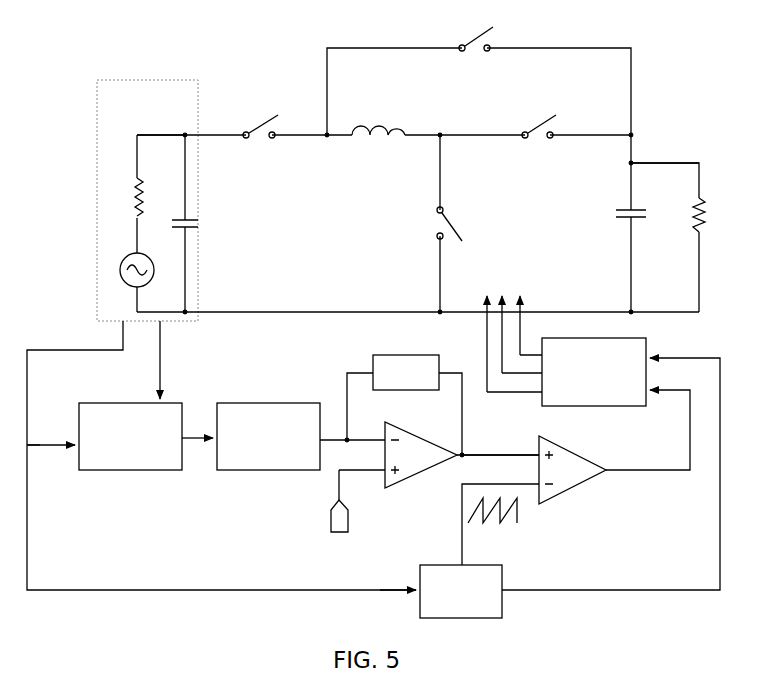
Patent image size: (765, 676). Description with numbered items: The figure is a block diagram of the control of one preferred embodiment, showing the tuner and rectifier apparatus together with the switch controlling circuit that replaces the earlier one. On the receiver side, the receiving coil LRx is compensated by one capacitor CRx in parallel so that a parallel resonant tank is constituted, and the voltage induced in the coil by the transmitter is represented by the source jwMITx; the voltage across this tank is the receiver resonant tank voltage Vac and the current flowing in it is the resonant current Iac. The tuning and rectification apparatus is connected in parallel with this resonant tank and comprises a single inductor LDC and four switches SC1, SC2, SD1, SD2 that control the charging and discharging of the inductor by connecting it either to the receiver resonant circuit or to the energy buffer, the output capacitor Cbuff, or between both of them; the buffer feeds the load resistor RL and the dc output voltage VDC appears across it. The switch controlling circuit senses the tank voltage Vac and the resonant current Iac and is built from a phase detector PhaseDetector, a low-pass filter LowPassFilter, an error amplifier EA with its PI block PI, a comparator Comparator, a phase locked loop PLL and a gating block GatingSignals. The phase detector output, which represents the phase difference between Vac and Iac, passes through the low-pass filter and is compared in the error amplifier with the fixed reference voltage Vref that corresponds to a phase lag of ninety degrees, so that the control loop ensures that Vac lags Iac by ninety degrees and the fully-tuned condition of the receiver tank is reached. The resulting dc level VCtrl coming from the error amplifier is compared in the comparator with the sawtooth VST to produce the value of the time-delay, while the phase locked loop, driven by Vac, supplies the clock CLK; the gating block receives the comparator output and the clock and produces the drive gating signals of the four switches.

The receiver resonant tank voltage Vac is at (161, 122).
The receiving coil LRx is at (121, 197).
The compensating capacitor CRx is at (199, 223).
The induced voltage source jwMITx is at (109, 276).
The switch SC1 is at (261, 117).
The switch SC2 is at (428, 224).
The switch SD1 is at (526, 120).
The switch SD2 is at (459, 30).
The inductor LDC is at (378, 119).
The energy buffer capacitor Cbuff is at (617, 201).
The dc output voltage VDC is at (665, 154).
The load resistor RL is at (684, 215).
The resonant current Iac is at (173, 360).
The phase detector PhaseDetector is at (130, 436).
The low-pass filter LowPassFilter is at (268, 436).
The PI controller PI is at (406, 372).
The error amplifier EA is at (421, 467).
The fixed reference voltage Vref is at (320, 516).
The control voltage VCtrl is at (500, 443).
The comparator Comparator is at (599, 473).
The sawtooth voltage VST is at (492, 524).
The phase locked loop PLL is at (461, 591).
The clock signal CLK is at (611, 474).
The gating block GatingSignals is at (594, 372).